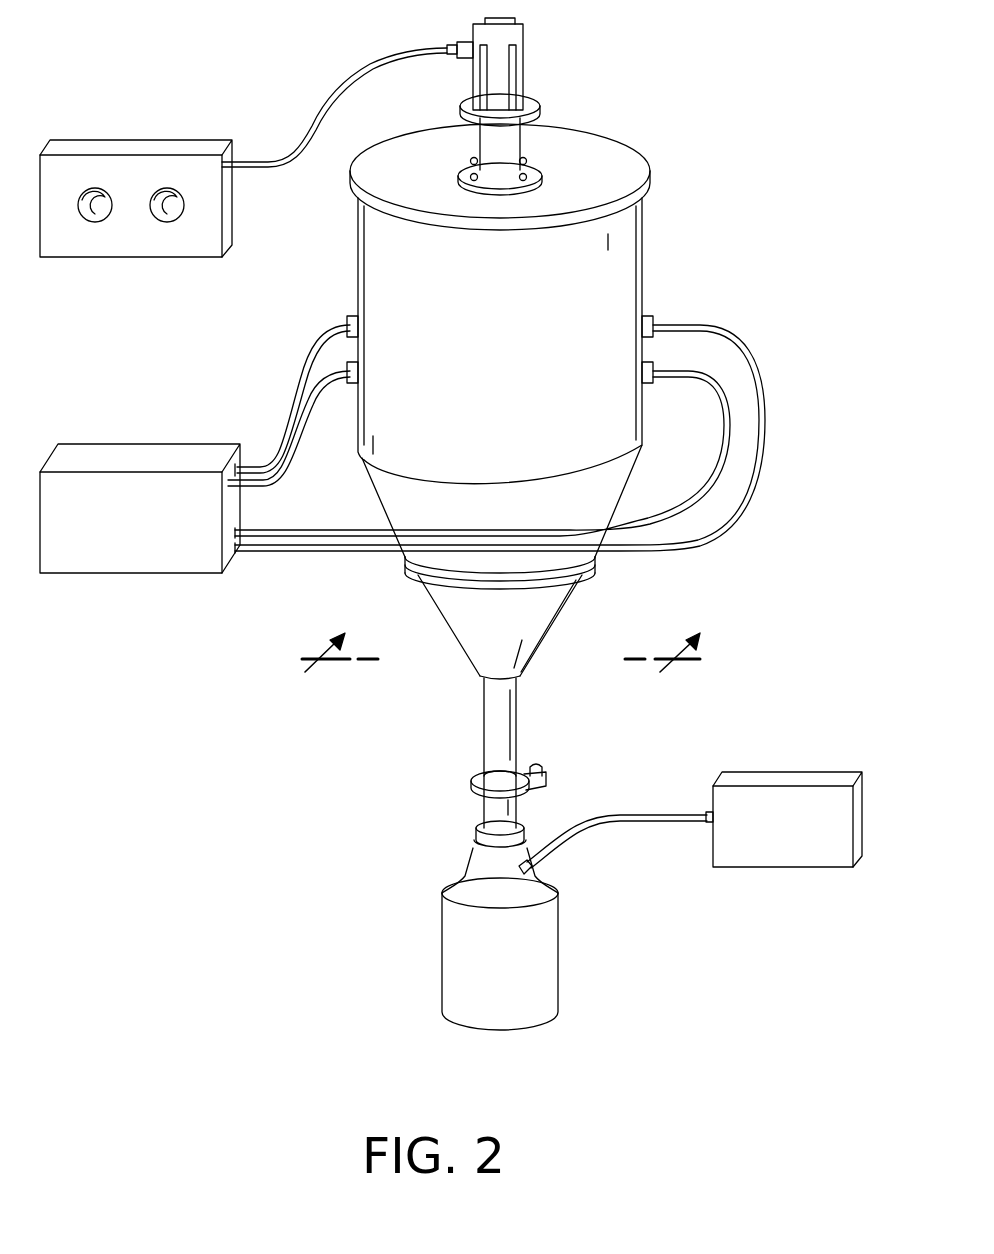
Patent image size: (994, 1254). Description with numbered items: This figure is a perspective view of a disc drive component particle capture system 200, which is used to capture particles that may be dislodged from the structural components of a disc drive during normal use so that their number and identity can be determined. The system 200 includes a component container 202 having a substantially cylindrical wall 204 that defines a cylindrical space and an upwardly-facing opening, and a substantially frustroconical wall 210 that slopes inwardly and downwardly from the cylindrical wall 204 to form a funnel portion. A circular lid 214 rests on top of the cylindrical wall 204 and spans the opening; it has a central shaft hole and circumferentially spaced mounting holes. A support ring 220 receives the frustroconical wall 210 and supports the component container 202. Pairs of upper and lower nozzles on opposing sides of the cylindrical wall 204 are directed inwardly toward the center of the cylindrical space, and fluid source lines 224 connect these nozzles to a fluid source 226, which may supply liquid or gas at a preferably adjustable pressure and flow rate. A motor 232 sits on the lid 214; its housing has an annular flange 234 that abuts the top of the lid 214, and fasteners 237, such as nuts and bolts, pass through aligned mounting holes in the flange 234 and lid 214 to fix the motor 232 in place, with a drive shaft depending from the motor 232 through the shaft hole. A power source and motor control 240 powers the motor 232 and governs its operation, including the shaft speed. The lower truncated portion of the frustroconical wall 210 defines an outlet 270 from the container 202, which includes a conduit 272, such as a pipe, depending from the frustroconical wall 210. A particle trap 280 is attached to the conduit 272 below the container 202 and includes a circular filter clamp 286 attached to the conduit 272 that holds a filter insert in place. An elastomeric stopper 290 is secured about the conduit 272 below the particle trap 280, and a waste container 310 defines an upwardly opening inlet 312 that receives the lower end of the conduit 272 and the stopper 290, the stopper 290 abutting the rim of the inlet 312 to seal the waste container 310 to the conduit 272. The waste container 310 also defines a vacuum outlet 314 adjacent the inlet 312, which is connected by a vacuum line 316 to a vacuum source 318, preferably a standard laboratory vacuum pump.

The disc drive component particle capture system 200 is at (773, 108).
The component container 202 is at (676, 288).
The cylindrical wall 204 is at (394, 270).
The frustroconical wall 210 is at (442, 606).
The circular lid 214 is at (614, 142).
The support ring 220 is at (596, 559).
The fluid source lines 224 is at (297, 352).
The fluid source 226 is at (98, 458).
The motor 232 is at (520, 80).
The annular flange 234 is at (466, 176).
The fasteners 237 is at (471, 159).
The power source and motor control 240 is at (156, 148).
The outlet 270 is at (570, 698).
The conduit 272 is at (490, 740).
The particle trap 280 is at (452, 790).
The circular filter clamp 286 is at (548, 776).
The elastomeric stopper 290 is at (480, 841).
The waste container 310 is at (428, 955).
The inlet 312 is at (464, 854).
The vacuum outlet 314 is at (560, 874).
The vacuum line 316 is at (648, 824).
The vacuum source 318 is at (805, 778).